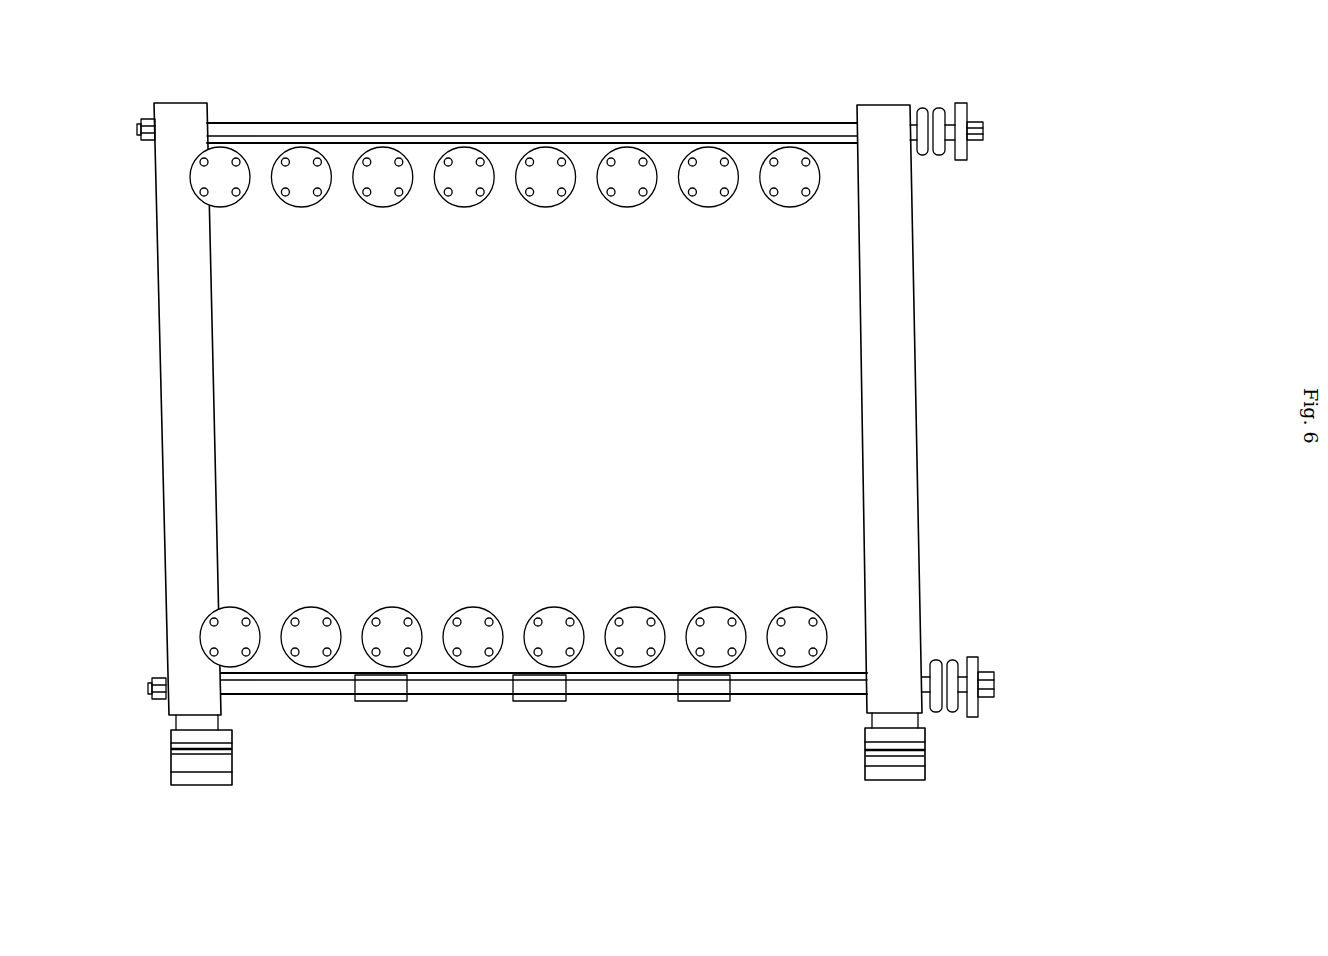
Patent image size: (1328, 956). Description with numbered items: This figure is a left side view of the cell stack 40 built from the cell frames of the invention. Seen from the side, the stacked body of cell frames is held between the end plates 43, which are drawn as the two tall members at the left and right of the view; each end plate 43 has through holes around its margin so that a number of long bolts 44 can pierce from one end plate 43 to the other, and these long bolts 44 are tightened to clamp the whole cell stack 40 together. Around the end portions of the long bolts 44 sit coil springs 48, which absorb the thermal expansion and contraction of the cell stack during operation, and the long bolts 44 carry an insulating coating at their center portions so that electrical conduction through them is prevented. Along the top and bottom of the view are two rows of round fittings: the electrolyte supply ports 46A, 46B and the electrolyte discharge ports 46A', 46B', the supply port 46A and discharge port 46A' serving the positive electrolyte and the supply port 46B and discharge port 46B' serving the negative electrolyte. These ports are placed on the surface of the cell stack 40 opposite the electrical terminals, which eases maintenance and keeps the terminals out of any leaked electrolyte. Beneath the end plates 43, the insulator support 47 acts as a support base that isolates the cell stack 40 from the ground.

The cell stack 40 is at (518, 740).
The end plate 43 is at (915, 422).
The long bolt 44 is at (757, 688).
The electrolyte supply port 46A is at (253, 707).
The electrolyte supply port 46B is at (336, 707).
The electrolyte discharge port 46A' is at (319, 130).
The electrolyte discharge port 46B' is at (233, 130).
The insulator support 47 is at (865, 758).
The coil spring 48 is at (950, 710).